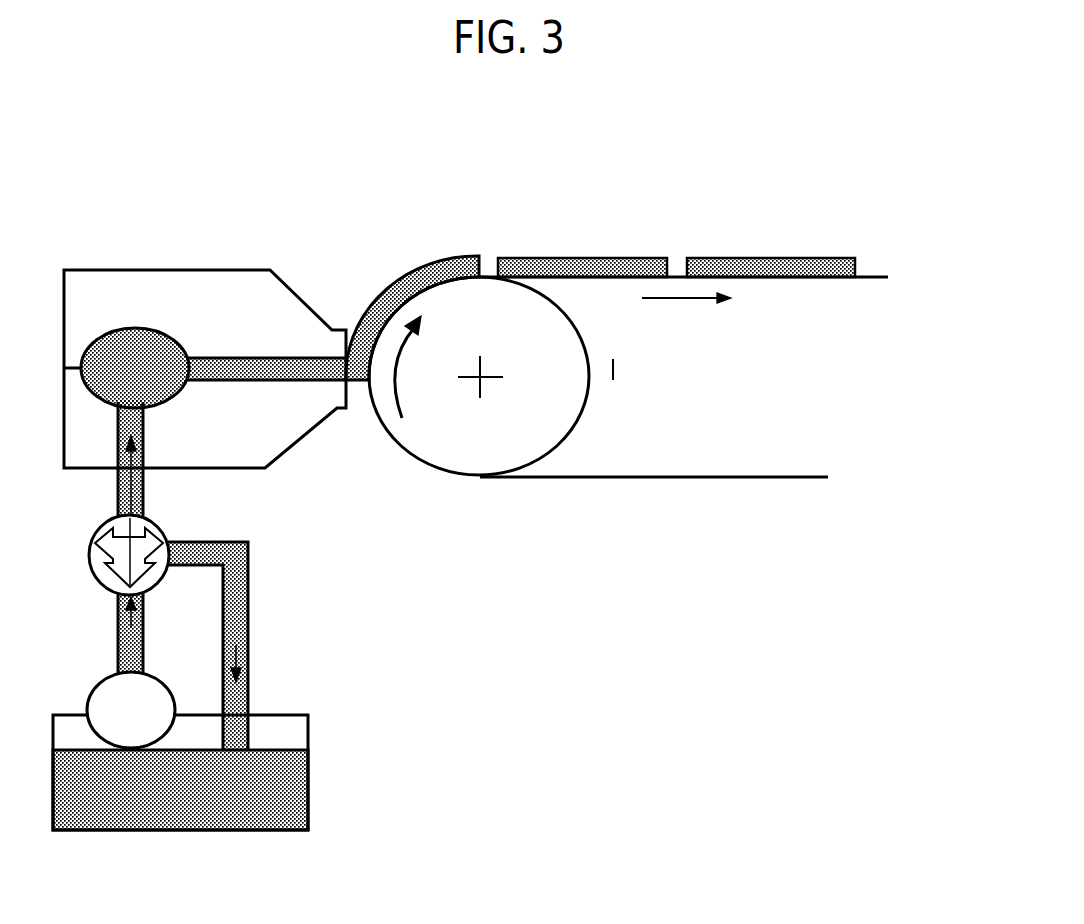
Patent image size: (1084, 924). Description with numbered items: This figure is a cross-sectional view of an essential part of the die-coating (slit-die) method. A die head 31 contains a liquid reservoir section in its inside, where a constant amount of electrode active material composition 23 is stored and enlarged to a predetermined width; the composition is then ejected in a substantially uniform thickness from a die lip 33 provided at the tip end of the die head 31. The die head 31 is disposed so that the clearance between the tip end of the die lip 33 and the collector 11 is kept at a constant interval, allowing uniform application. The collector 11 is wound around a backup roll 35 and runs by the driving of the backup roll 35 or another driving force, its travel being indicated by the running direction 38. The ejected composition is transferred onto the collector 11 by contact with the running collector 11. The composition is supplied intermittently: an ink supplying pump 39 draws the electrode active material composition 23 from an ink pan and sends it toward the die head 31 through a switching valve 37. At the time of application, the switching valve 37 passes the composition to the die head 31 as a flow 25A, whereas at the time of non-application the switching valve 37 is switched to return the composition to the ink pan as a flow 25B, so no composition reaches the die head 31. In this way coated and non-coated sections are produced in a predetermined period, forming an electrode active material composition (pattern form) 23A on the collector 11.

The die head 31 is at (205, 318).
The electrode active material composition 23 is at (267, 782).
The die lip 33 is at (337, 345).
The electrode active material composition (pattern form) 23A is at (600, 294).
The running direction 38 is at (776, 328).
The collector 11 is at (683, 377).
The backup roll 35 is at (558, 418).
The switching valve 37 is at (150, 547).
The flow of the electrode active material composition at the time of application 25A is at (143, 453).
The flow of the electrode active material composition at the time of non-application 25B is at (245, 662).
The ink supplying pump 39 is at (237, 710).